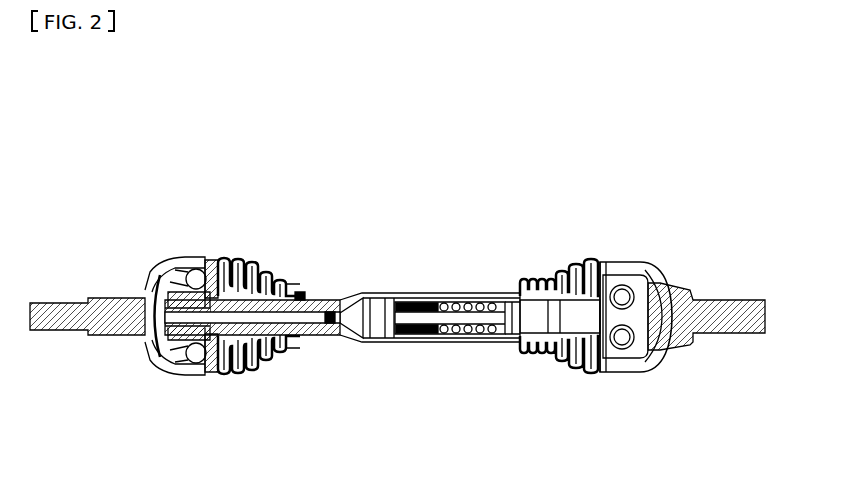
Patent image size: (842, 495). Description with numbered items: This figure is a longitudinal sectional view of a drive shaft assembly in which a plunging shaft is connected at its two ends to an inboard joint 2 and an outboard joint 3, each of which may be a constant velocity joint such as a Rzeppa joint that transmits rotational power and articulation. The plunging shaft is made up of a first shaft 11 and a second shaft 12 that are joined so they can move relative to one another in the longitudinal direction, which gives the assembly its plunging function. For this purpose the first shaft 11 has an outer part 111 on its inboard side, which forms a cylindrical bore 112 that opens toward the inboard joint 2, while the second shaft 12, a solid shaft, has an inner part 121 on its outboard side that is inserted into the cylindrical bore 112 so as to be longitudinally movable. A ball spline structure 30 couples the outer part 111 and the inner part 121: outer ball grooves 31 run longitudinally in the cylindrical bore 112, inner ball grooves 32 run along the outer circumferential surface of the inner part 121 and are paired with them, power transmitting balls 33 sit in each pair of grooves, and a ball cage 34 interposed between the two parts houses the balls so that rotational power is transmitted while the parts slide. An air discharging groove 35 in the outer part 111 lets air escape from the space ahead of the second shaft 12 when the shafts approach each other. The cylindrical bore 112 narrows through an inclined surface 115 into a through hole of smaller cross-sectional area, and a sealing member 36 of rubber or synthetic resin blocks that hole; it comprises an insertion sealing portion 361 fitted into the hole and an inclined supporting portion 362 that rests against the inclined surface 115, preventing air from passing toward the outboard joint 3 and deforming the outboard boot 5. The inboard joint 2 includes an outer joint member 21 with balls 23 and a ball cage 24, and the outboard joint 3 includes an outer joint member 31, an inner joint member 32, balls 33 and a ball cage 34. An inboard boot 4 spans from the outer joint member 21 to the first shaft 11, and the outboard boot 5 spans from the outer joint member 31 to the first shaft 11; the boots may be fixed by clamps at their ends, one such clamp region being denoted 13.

The inboard joint 2 is at (681, 319).
The outboard joint 3 is at (282, 263).
The inboard boot 4 is at (583, 262).
The outboard boot 5 is at (240, 265).
The first shaft 11 is at (322, 298).
The second shaft 12 is at (560, 275).
The boot clamp portion 13 is at (273, 290).
The outer joint member 21 is at (632, 260).
The balls 23 is at (645, 368).
The ball cage 24 is at (598, 372).
The ball spline structure 30 is at (424, 304).
The outer ball grooves 31 is at (152, 282).
The inner ball grooves 32 is at (155, 356).
The power transmitting balls 33 is at (193, 268).
The ball cage 34 is at (185, 365).
The air discharging groove 35 is at (405, 345).
The sealing member 36 is at (301, 374).
The outer part 111 is at (463, 295).
The cylindrical bore 112 is at (388, 293).
The inclined surface 115 is at (365, 293).
The inner part 121 is at (430, 345).
The insertion sealing portion 361 is at (325, 340).
The inclined supporting portion 362 is at (340, 345).